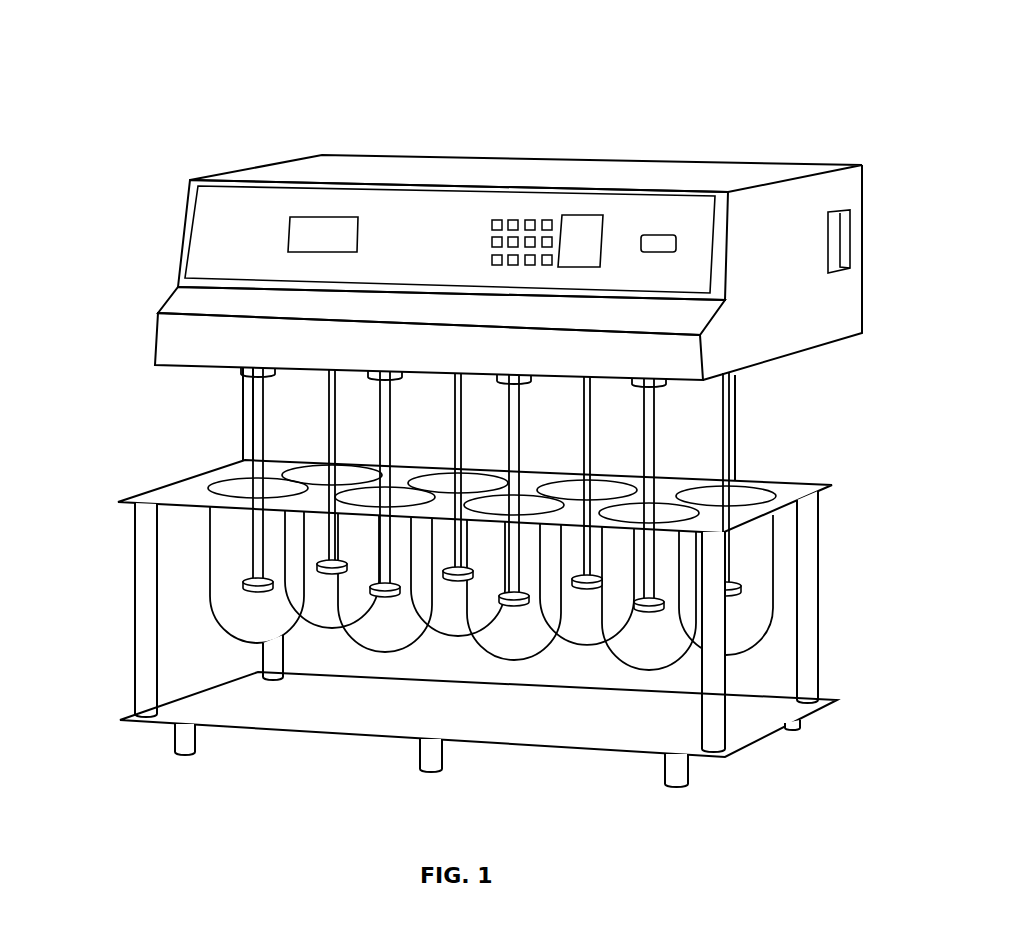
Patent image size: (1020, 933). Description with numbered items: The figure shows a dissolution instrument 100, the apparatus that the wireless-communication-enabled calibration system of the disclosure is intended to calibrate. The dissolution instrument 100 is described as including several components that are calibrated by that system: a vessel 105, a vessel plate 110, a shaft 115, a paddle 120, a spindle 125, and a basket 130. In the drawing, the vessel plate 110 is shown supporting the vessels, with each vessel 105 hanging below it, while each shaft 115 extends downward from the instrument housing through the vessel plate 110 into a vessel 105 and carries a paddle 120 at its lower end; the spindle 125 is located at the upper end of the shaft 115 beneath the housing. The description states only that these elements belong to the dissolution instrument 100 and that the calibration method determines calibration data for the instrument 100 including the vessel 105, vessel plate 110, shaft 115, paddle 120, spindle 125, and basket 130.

The dissolution instrument 100 is at (437, 100).
The vessel 105 is at (780, 570).
The vessel plate 110 is at (175, 493).
The shaft 115 is at (262, 405).
The paddle 120 is at (260, 588).
The spindle 125 is at (653, 388).
The basket 130 is at (752, 612).